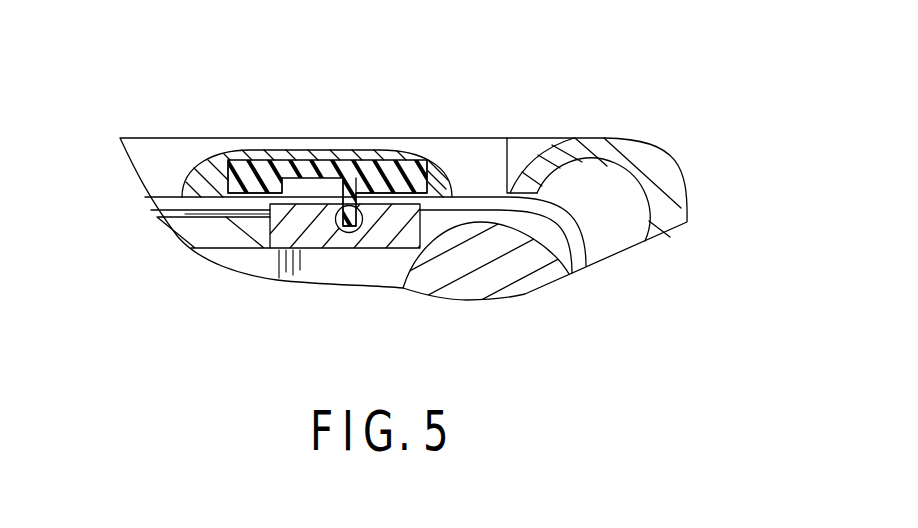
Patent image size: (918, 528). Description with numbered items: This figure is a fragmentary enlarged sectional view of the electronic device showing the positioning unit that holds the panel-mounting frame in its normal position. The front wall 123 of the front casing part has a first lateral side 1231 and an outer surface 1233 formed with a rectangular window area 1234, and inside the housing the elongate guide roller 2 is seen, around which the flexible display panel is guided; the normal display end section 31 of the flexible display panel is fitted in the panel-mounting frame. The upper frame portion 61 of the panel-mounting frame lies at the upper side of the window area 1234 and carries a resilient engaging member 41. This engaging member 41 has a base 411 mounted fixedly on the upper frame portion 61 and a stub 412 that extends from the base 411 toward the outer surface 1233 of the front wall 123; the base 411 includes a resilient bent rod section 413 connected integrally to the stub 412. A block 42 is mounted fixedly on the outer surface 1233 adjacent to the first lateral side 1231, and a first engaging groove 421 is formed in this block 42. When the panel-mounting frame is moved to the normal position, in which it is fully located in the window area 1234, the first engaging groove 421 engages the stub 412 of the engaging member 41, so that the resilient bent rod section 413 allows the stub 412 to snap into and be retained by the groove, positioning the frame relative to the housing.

The guide roller 2 is at (500, 269).
The normal display end section 31 is at (168, 204).
The resilient engaging member 41 is at (293, 162).
The base 411 is at (238, 165).
The stub 412 is at (398, 166).
The resilient bent rod section 413 is at (380, 165).
The block 42 is at (322, 236).
The first engaging groove 421 is at (343, 234).
The upper frame portion 61 is at (192, 182).
The front wall 123 is at (232, 240).
The first lateral side 1231 is at (522, 187).
The outer surface 1233 is at (182, 270).
The window area 1234 is at (195, 214).